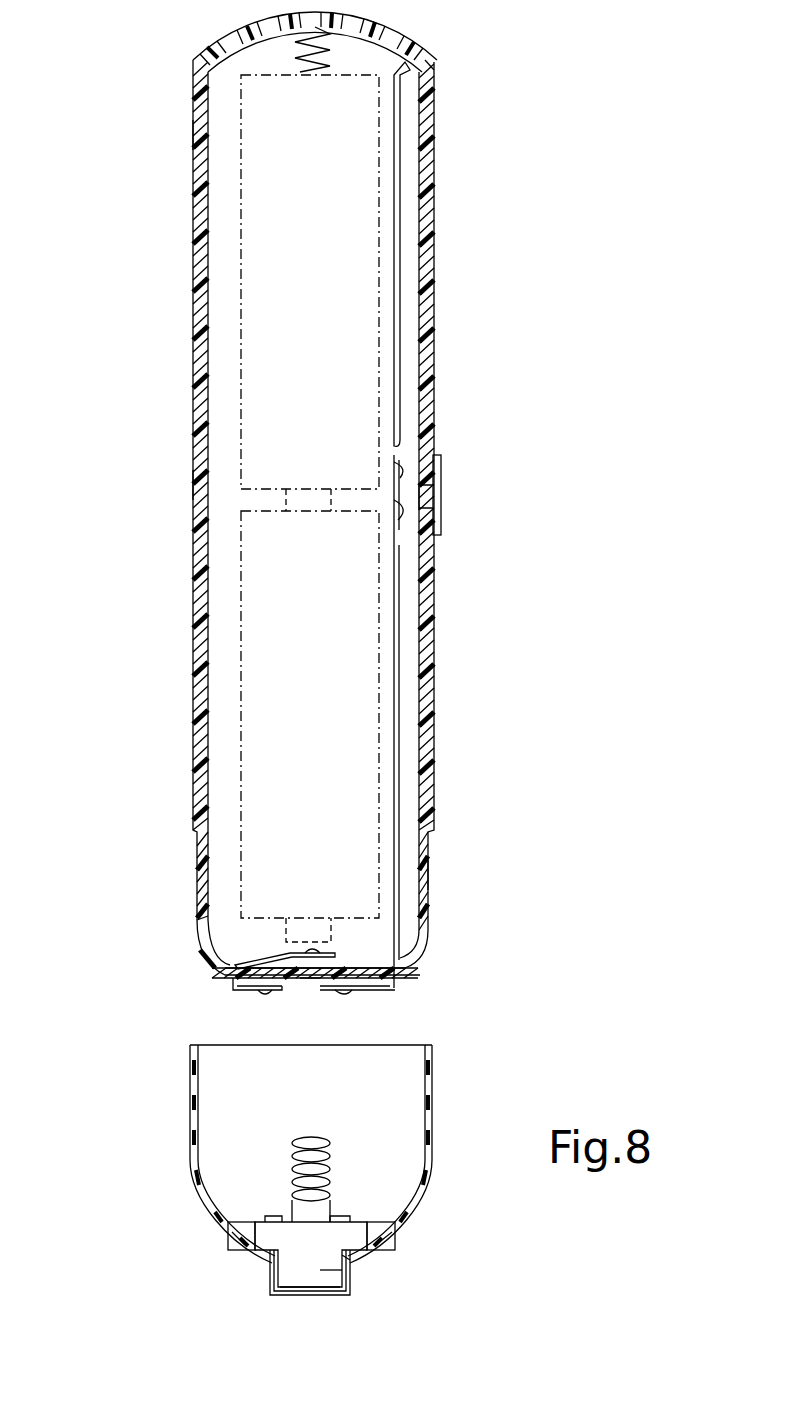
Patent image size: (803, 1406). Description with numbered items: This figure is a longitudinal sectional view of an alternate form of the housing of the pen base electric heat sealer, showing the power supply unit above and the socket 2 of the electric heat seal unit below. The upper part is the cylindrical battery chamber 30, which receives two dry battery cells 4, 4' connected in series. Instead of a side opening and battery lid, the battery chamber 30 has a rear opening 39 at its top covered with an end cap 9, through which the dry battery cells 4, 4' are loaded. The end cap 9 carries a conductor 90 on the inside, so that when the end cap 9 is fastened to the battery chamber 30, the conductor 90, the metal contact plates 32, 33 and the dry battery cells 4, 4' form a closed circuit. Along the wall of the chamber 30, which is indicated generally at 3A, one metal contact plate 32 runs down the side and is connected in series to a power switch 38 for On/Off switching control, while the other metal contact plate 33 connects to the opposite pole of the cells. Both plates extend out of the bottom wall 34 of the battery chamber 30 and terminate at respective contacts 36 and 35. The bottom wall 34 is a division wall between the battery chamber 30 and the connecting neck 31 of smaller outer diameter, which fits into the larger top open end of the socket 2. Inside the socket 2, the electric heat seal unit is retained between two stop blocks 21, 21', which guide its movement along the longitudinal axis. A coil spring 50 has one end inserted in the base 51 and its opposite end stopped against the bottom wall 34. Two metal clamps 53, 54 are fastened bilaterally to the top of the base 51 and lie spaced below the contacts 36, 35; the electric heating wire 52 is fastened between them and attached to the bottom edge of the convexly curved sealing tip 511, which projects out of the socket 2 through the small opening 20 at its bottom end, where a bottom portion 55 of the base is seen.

The conductor 90 is at (193, 60).
The end cap 9 is at (430, 72).
The rear opening 39 is at (190, 135).
The dry battery cell 4 is at (252, 282).
The dry battery cell 4' is at (252, 715).
The battery chamber 30 is at (432, 325).
The power switch 38 is at (443, 480).
The housing wall 3A is at (190, 485).
The metal contact plate 32 is at (400, 555).
The connecting neck 31 is at (428, 875).
The metal contact plate 33 is at (235, 958).
The contact 35 is at (262, 995).
The bottom wall 34 is at (306, 980).
The contact 36 is at (345, 995).
The socket 2 is at (190, 1135).
The coil spring 50 is at (325, 1140).
The metal clamp 54 is at (248, 1220).
The metal clamp 53 is at (410, 1212).
The stop block 21 is at (205, 1262).
The stop block 21' is at (437, 1258).
The base 51 is at (276, 1268).
The bottom plate 55 is at (290, 1291).
The sealing tip 511 is at (320, 1272).
The small opening 20 is at (348, 1268).
The electric heating wire 52 is at (345, 1280).